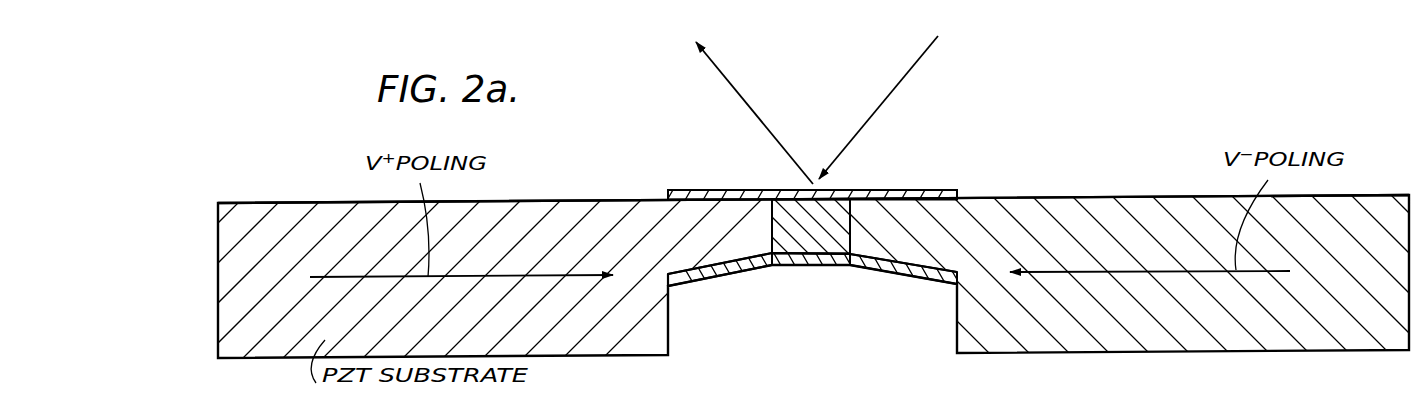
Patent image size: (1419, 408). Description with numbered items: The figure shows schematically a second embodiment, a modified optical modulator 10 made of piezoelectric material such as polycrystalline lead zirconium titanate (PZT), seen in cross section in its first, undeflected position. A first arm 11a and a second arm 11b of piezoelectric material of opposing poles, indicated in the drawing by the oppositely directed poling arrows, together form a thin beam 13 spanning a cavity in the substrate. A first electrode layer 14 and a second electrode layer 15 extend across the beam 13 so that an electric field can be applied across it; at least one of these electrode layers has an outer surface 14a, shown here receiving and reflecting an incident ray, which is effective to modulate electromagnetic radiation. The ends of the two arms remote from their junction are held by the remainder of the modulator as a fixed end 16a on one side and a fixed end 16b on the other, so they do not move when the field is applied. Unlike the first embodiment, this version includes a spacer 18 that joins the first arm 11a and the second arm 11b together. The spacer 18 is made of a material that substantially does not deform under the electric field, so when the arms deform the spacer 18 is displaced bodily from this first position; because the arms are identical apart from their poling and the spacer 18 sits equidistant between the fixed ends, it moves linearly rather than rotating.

The optical modulator 10 is at (1250, 72).
The first arm 11a is at (718, 240).
The second arm 11b is at (903, 248).
The beam 13 is at (767, 274).
The first electrode layer 14 is at (885, 190).
The outer surface 14a is at (738, 180).
The second electrode layer 15 is at (686, 286).
The fixed end 16a is at (650, 233).
The fixed end 16b is at (950, 220).
The spacer 18 is at (812, 240).